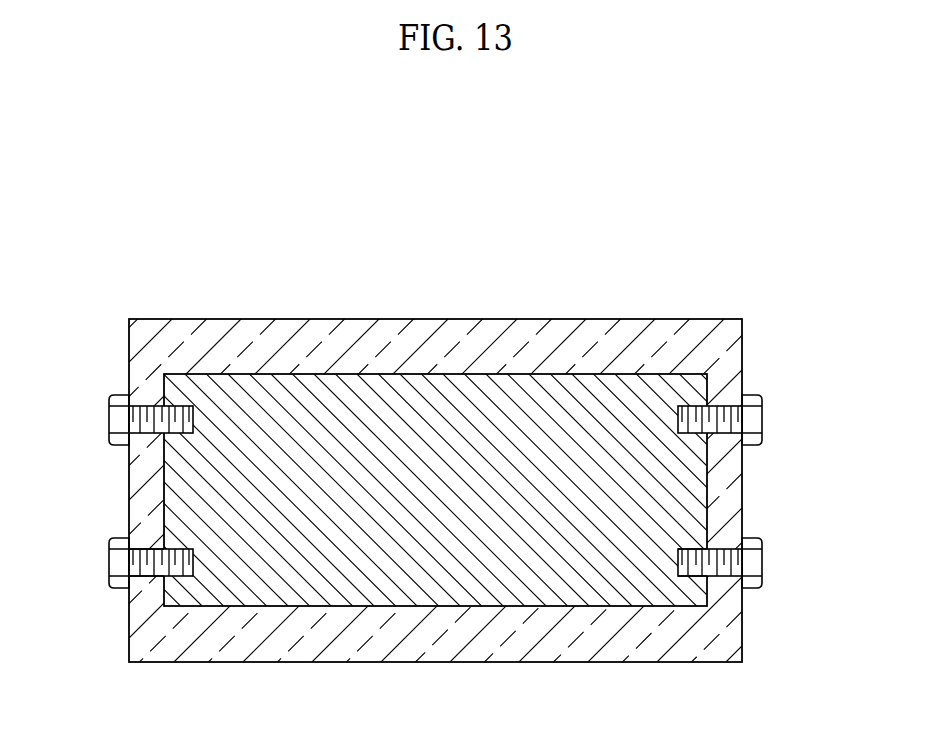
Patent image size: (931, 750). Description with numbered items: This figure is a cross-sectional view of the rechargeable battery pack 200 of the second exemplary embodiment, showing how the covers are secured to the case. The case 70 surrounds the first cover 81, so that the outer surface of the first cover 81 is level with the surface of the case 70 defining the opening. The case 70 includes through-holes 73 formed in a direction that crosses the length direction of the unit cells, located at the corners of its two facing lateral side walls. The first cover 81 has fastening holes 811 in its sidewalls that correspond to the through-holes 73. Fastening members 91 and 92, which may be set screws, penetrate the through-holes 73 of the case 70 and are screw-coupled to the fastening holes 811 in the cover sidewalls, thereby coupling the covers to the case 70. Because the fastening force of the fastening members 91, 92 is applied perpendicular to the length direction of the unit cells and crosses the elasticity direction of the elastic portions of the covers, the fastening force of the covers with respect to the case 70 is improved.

The rechargeable battery pack 200 is at (465, 144).
The case 70 is at (561, 345).
The first cover 81 is at (372, 400).
The fastening hole 811 is at (695, 578).
The through-hole 73 is at (150, 578).
The fastening member 91 is at (118, 564).
The fastening member 92 is at (757, 562).